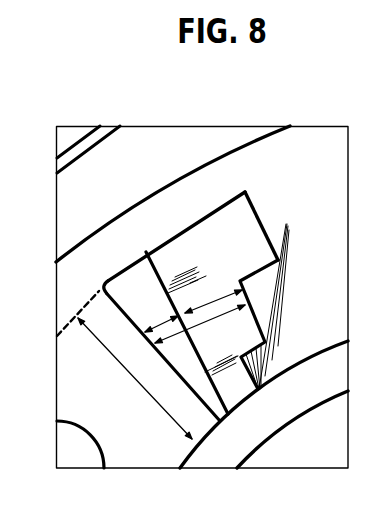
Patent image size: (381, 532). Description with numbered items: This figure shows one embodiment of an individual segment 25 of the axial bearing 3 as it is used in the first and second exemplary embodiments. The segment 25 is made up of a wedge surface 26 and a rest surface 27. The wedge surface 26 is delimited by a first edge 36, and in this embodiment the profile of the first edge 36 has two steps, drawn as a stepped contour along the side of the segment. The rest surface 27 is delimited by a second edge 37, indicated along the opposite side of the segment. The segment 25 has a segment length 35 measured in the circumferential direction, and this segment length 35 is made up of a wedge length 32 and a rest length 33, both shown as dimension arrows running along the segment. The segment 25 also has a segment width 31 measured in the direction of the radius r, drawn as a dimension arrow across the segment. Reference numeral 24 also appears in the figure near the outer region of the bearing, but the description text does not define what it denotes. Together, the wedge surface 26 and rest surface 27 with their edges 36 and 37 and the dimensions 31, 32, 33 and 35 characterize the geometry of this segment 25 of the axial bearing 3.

The stator yoke 24 is at (318, 145).
The individual segment 25 is at (202, 211).
The rest surface 27 is at (138, 268).
The second edge 37 is at (109, 309).
The segment width 31 is at (95, 345).
The first edge 36 is at (257, 212).
The axial bearing 3 is at (312, 301).
The rest length 33 is at (168, 323).
The wedge length 32 is at (210, 303).
The segment length 35 is at (209, 318).
The wedge surface 26 is at (228, 371).